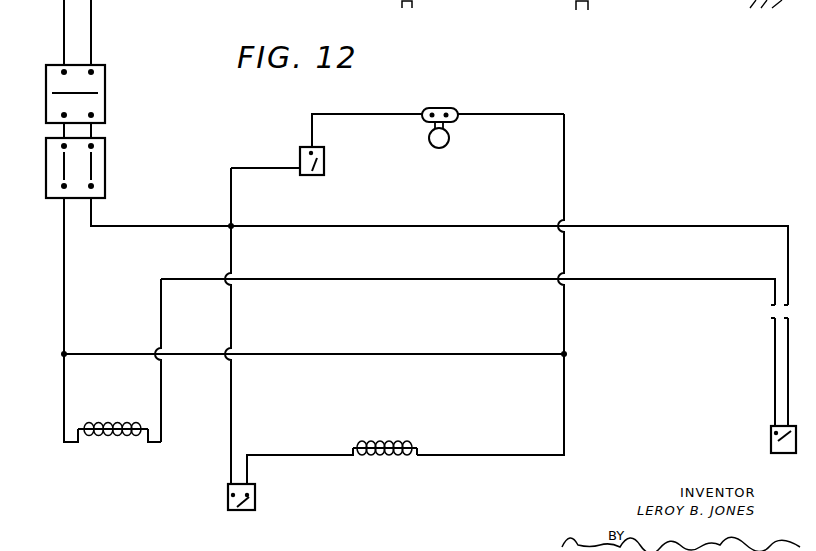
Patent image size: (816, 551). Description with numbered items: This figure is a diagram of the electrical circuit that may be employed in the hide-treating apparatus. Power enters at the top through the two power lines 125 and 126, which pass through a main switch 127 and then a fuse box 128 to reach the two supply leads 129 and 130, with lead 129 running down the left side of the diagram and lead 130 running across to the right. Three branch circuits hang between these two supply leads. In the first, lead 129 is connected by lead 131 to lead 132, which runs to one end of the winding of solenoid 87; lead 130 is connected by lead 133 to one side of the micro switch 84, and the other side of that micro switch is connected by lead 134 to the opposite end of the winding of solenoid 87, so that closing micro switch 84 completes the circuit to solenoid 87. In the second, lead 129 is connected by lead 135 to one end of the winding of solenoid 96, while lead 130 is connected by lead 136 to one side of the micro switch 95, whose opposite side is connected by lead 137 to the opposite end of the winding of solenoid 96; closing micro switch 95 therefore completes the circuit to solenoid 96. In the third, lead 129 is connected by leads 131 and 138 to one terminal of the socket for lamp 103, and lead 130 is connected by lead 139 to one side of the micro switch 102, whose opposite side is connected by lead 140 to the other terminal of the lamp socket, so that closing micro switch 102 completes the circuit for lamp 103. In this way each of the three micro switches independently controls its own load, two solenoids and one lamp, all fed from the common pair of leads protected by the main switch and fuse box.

The micro switch 84 is at (238, 512).
The solenoid 87 is at (402, 445).
The micro switch 95 is at (771, 448).
The solenoid 96 is at (112, 440).
The micro switch 102 is at (303, 150).
The lamp 103 is at (450, 141).
The power line 125 is at (63, 19).
The power line 126 is at (93, 14).
The main switch 127 is at (97, 85).
The fuse box 128 is at (95, 164).
The lead 129 is at (63, 298).
The lead 130 is at (143, 226).
The lead 131 is at (467, 354).
The lead 132 is at (566, 433).
The lead 133 is at (229, 419).
The lead 134 is at (291, 456).
The lead 135 is at (63, 420).
The lead 136 is at (649, 226).
The lead 137 is at (673, 280).
The lead 138 is at (566, 172).
The lead 139 is at (229, 188).
The lead 140 is at (336, 114).